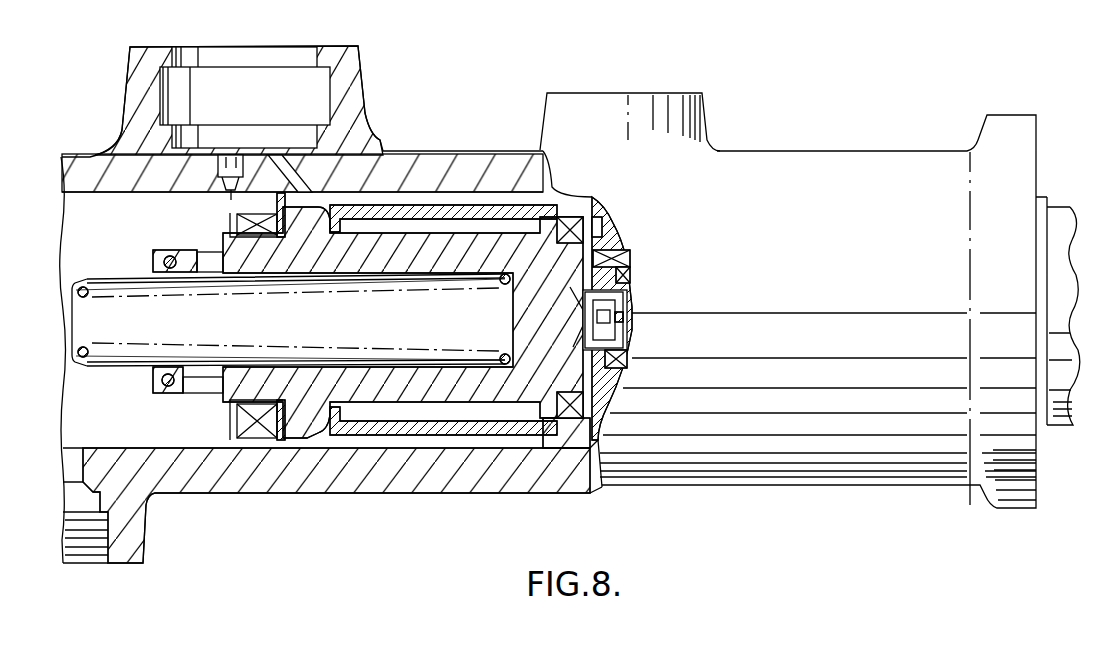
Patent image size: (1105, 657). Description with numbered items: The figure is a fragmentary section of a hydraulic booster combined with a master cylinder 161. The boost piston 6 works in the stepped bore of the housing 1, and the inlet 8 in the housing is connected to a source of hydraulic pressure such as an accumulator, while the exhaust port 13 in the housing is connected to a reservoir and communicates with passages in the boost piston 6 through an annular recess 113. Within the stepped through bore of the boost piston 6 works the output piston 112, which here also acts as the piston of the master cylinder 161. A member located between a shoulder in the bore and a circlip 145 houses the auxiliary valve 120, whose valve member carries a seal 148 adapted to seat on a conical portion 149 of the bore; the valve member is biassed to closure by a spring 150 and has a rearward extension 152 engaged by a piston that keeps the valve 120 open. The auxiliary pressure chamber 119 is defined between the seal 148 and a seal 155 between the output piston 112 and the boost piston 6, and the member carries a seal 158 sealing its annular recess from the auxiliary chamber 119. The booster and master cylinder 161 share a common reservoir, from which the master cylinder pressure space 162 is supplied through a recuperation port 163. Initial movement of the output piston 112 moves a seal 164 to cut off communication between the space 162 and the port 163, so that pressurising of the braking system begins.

The housing 1 is at (815, 148).
The boost piston 6 is at (595, 449).
The inlet 8 is at (627, 93).
The exhaust port 13 is at (323, 183).
The output piston 112 is at (540, 380).
The annular recess 113 is at (415, 203).
The auxiliary pressure chamber 119 is at (570, 322).
The auxiliary valve 120 is at (577, 305).
The circlip 145 is at (612, 258).
The seal 148 is at (627, 337).
The conical portion 149 is at (630, 348).
The spring 150 is at (628, 300).
The rearward extension 152 is at (627, 317).
The seal 155 is at (570, 222).
The seal 158 is at (627, 268).
The master cylinder 161 is at (240, 493).
The master cylinder pressure space 162 is at (213, 437).
The recuperation port 163 is at (233, 193).
The seal 164 is at (272, 443).